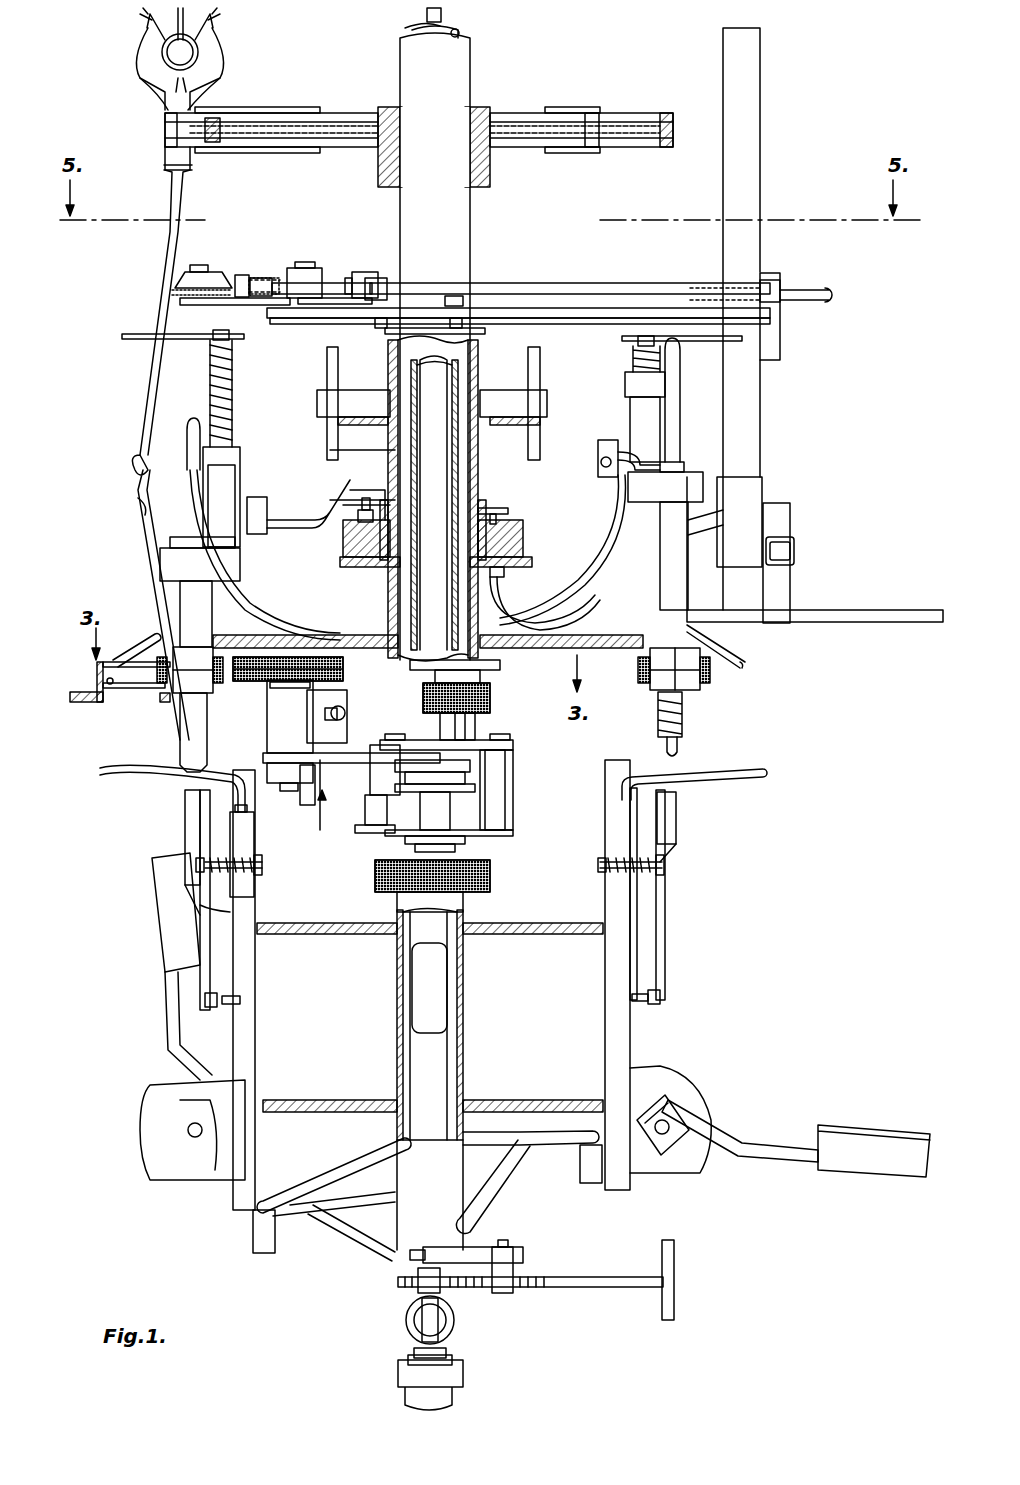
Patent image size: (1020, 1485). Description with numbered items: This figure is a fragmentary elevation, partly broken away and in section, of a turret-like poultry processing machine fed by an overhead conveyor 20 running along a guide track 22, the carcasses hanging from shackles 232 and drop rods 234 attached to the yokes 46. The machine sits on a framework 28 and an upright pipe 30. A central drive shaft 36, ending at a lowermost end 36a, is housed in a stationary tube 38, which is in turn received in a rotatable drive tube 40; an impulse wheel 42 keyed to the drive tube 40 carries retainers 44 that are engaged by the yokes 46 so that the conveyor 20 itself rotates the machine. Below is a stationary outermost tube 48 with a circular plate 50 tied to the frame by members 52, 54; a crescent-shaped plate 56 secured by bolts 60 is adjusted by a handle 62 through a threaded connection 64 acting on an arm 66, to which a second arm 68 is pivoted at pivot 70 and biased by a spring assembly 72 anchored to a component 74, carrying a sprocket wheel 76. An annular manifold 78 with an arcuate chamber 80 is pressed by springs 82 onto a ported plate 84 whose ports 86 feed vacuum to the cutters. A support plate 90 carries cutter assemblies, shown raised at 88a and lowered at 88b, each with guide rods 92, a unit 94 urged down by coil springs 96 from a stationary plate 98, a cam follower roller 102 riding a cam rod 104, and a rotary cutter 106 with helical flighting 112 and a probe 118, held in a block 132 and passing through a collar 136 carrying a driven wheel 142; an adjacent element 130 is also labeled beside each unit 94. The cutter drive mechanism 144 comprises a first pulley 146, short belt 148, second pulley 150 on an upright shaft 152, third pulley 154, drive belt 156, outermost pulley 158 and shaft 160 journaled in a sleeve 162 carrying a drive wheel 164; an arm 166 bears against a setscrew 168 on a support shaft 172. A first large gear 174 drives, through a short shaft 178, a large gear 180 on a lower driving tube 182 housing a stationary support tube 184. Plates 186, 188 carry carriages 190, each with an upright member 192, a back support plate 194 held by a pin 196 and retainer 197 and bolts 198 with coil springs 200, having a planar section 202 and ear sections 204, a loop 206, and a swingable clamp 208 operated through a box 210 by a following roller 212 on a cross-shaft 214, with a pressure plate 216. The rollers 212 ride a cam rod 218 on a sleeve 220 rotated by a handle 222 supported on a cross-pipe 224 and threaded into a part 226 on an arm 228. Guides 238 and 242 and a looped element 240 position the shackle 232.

The overhead conveyor 20 is at (169, 59).
The guide track 22 is at (198, 45).
The framework 28 is at (768, 60).
The upright pipe 30 is at (452, 1398).
The drive shaft 36 is at (458, 22).
The lowermost end 36a is at (455, 848).
The stationary tube 38 is at (412, 27).
The drive tube 40 is at (465, 72).
The impulse wheel 42 is at (525, 142).
The retainers 44 is at (330, 104).
The yokes 46 is at (160, 80).
The outermost tube 48 is at (385, 340).
The circular plate 50 is at (472, 335).
The radially extending member 52 is at (545, 324).
The radially extending member 54 is at (620, 286).
The crescent-shaped plate 56 is at (410, 283).
The bolts 60 is at (455, 294).
The handle 62 is at (832, 295).
The threaded connection 64 is at (790, 270).
The radially extending arm 66 is at (338, 318).
The second arm 68 is at (250, 306).
The pivot 70 is at (303, 262).
The spring assembly 72 is at (262, 274).
The transversely extending component 74 is at (335, 290).
The sprocket wheel 76 is at (205, 278).
The annular manifold 78 is at (518, 512).
The arcuate chamber 80 is at (345, 545).
The springs 82 is at (350, 500).
The plate 84 is at (505, 578).
The ports 86 is at (358, 568).
The cutter assembly 88a is at (702, 462).
The cutter assembly 88b is at (168, 520).
The support plate 90 is at (562, 640).
The guide rods 92 is at (240, 598).
The unit 94 is at (242, 460).
The coil springs 96 is at (236, 368).
The stationary plate 98 is at (135, 334).
The cam follower roller 102 is at (268, 508).
The cam rod 104 is at (605, 468).
The rotary cutter 106 is at (693, 568).
The helical flighting 112 is at (684, 708).
The probe 118 is at (668, 742).
The rod 130 is at (190, 432).
The block 132 is at (172, 566).
The collar 136 is at (702, 683).
The driven wheel 142 is at (222, 686).
The mechanism 144 is at (320, 812).
The first pulley 146 is at (475, 788).
The short belt 148 is at (470, 766).
The second pulley 150 is at (388, 776).
The upright shaft 152 is at (380, 800).
The third pulley 154 is at (475, 730).
The drive belt 156 is at (315, 800).
The outermost pulley 158 is at (265, 757).
The upright shaft 160 is at (300, 785).
The upright sleeve 162 is at (268, 705).
The drive wheel 164 is at (262, 665).
The arm 166 is at (343, 668).
The setscrew 168 is at (327, 712).
The support shaft 172 is at (498, 746).
The first large gear 174 is at (478, 688).
The short upright shaft 178 is at (492, 818).
The large gear 180 is at (492, 885).
The lower driving tube 182 is at (465, 983).
The stationary support tube 184 is at (445, 1065).
The circular plate 186 is at (345, 938).
The circular plate 188 is at (345, 1100).
The carriage 190 is at (487, 975).
The upright member 192 is at (247, 1022).
The back support plate 194 is at (672, 940).
The lower horizontal pin 196 is at (220, 1008).
The retainer 197 is at (242, 978).
The upper horizontal bolts 198 is at (262, 862).
The coil springs 200 is at (245, 900).
The planar section 202 is at (240, 940).
The ear sections 204 is at (188, 840).
The U-shaped loop 206 is at (150, 775).
The swingable clamp 208 is at (160, 1014).
The box 210 is at (160, 1112).
The following roller 212 is at (275, 1250).
The cross-shaft 214 is at (188, 1136).
The pressure plate 216 is at (165, 940).
The cam rod 218 is at (524, 1147).
The sleeve 220 is at (398, 1132).
The handle 222 is at (625, 1290).
The cross-pipe 224 is at (410, 1325).
The part 226 is at (505, 1295).
The radially extending arm 228 is at (478, 1255).
The shackle 232 is at (165, 542).
The drop rod 234 is at (175, 240).
The looped guide 238 is at (170, 705).
The looped element 240 is at (735, 662).
The arcuate guide 242 is at (86, 682).